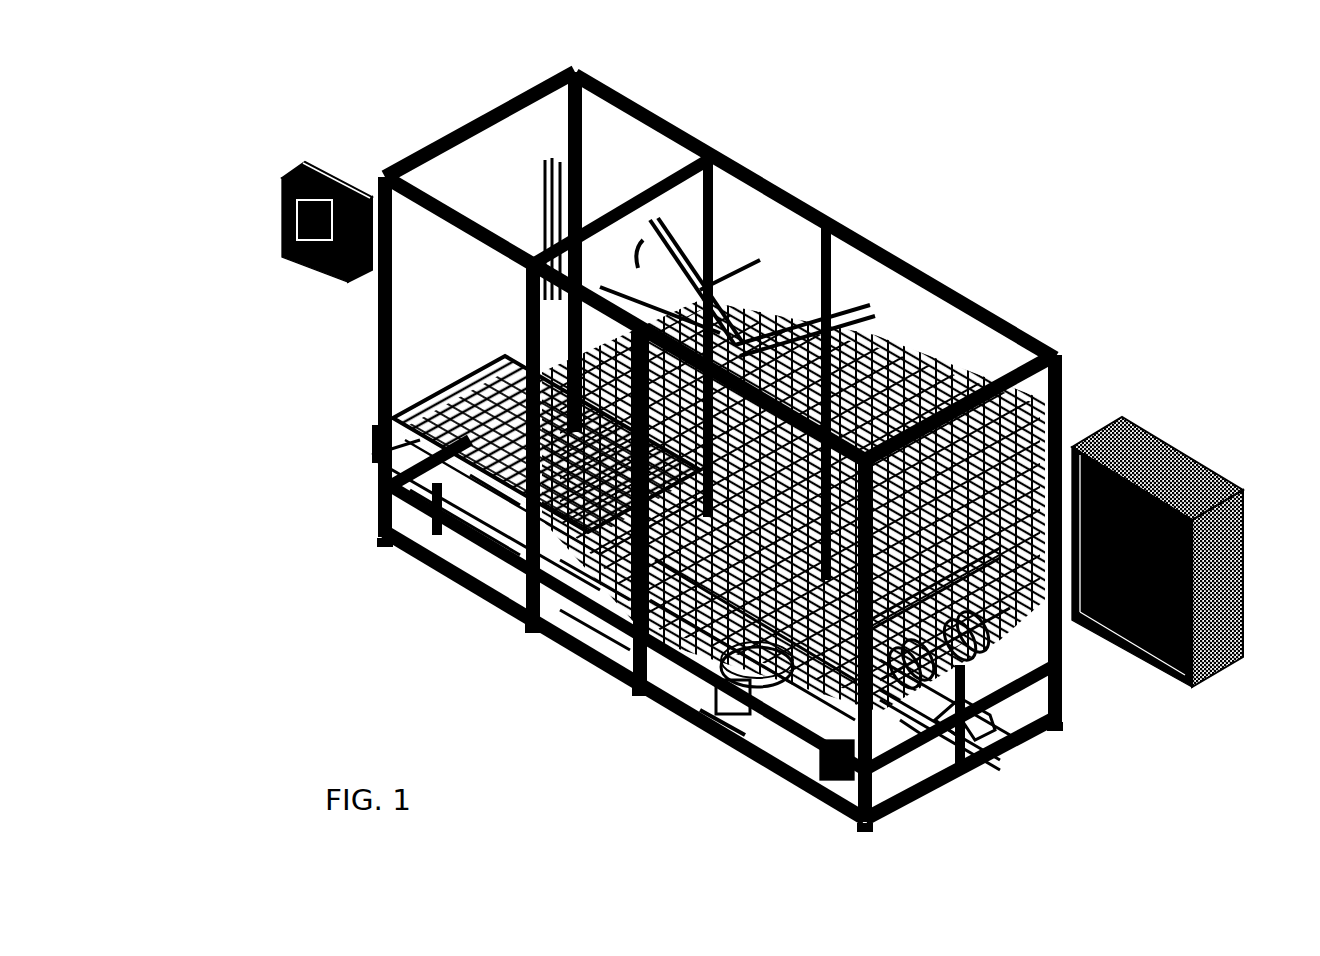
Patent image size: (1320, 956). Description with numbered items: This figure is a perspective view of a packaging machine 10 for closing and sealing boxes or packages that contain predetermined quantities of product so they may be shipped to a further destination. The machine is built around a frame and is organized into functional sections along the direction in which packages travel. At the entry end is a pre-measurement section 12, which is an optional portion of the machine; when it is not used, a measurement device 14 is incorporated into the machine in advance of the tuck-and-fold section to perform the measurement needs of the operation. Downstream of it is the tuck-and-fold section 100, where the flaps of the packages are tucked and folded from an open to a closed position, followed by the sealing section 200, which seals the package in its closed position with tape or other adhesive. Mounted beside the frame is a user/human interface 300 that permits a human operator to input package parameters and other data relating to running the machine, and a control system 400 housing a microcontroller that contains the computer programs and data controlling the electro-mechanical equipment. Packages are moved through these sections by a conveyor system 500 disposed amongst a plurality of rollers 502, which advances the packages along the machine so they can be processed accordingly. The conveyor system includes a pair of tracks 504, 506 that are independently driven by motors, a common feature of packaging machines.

The packaging machine 10 is at (962, 216).
The pre-measurement section 12 is at (345, 392).
The measurement device 14 is at (705, 120).
The tuck-and-fold section 100 is at (530, 689).
The sealing section 200 is at (705, 765).
The user/human interface 300 is at (282, 185).
The control system 400 is at (1178, 439).
The conveyor system 500 is at (487, 357).
The rollers 502 is at (375, 455).
The track 504 is at (985, 710).
The track 506 is at (1012, 658).